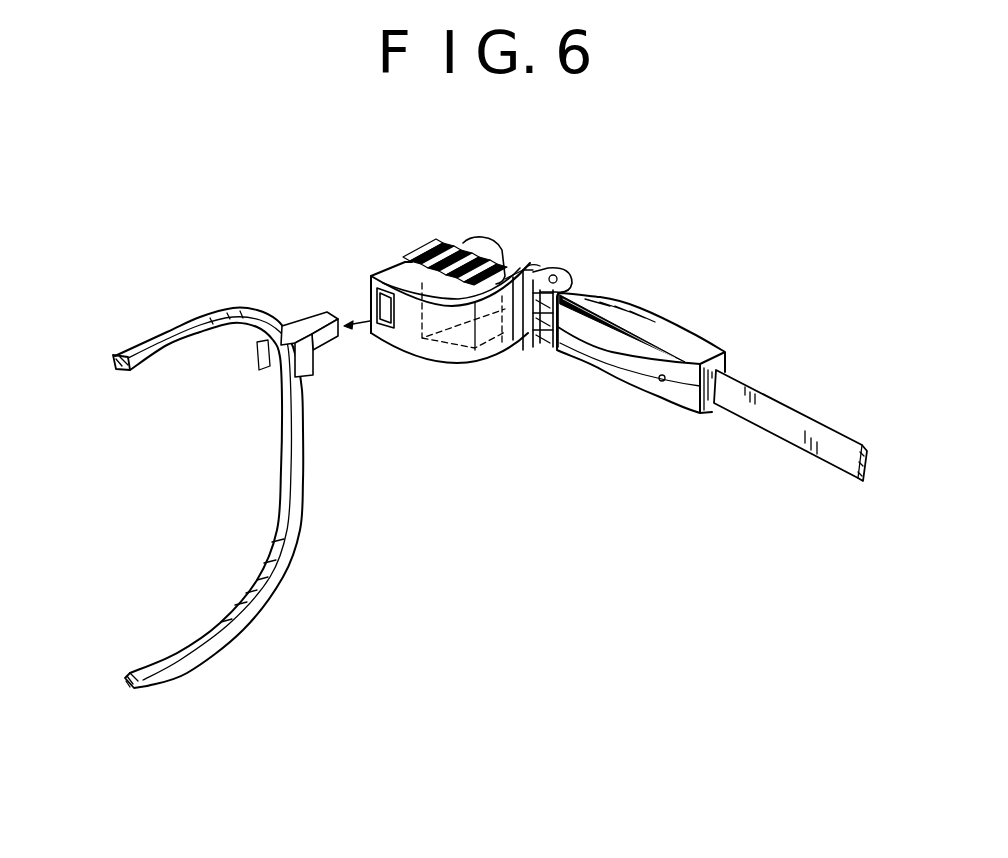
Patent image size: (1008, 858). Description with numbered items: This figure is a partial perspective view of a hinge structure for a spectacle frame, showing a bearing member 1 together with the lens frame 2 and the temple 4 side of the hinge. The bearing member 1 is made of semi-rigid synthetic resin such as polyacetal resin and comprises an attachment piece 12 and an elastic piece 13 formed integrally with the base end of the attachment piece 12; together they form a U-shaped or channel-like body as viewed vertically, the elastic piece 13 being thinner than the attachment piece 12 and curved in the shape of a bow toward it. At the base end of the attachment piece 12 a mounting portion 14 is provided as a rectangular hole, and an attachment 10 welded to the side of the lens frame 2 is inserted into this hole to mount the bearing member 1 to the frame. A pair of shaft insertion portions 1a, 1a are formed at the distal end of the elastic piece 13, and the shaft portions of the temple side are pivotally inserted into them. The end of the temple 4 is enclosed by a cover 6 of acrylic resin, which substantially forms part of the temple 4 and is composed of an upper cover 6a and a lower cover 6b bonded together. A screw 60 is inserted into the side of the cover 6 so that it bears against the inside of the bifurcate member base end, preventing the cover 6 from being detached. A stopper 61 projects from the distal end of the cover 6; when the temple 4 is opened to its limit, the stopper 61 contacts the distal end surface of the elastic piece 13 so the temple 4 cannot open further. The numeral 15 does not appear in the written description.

The bearing member 1 is at (504, 216).
The shaft insertion portion 1a is at (567, 283).
The lens frame 2 is at (280, 454).
The temple 4 is at (781, 438).
The cover 6 is at (660, 314).
The upper cover 6a is at (693, 340).
The lower cover 6b is at (626, 384).
The attachment 10 is at (307, 313).
The attachment piece 12 is at (397, 272).
The elastic piece 13 is at (478, 332).
The mounting portion 14 is at (386, 318).
The hinge pin 15 is at (548, 271).
The screw 60 is at (660, 383).
The stopper 61 is at (542, 268).